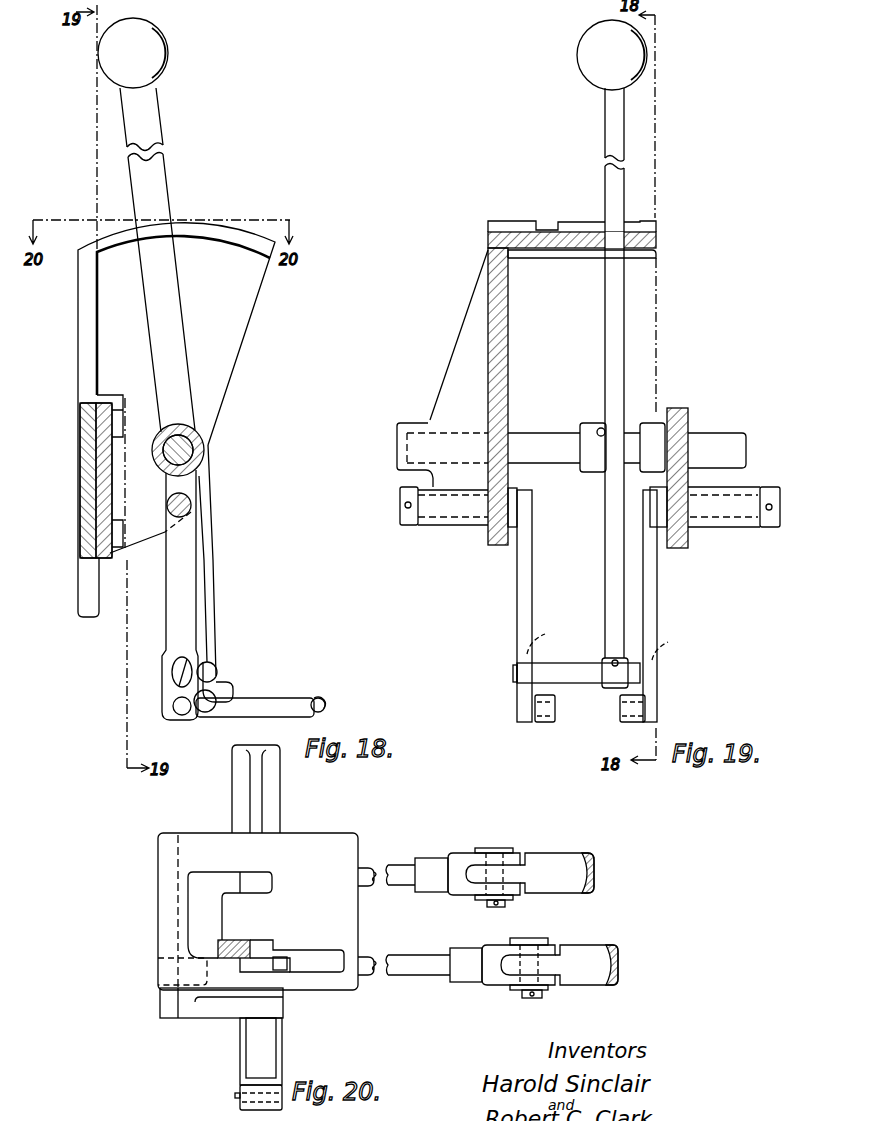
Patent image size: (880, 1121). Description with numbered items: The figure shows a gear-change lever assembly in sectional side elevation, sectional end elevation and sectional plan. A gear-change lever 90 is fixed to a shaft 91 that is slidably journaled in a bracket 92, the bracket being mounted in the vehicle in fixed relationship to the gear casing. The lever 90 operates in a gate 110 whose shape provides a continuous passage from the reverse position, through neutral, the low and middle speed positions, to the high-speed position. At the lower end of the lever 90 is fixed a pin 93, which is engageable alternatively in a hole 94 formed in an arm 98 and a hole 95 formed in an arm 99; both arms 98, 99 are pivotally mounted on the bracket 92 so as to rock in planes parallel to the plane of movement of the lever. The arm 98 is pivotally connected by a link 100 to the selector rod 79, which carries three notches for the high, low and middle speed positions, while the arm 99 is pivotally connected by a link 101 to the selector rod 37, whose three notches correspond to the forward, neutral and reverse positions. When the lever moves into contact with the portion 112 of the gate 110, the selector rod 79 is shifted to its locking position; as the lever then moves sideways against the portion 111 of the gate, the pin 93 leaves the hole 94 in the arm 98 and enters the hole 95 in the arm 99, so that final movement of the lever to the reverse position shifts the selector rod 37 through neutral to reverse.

In FIG. 18, the gear-change lever 90 is at (162, 206).
In FIG. 19, the gear-change lever 90 is at (615, 188).
In FIG. 20, the gear-change lever 90 is at (243, 940).
In FIG. 18, the gate 110 is at (232, 232).
In FIG. 19, the gate 110 is at (648, 228).
In FIG. 20, the gate 110 is at (335, 845).
In FIG. 18, the bracket 92 is at (90, 390).
In FIG. 19, the bracket 92 is at (450, 394).
In FIG. 20, the bracket 92 is at (160, 1016).
In FIG. 18, the shaft 91 is at (200, 451).
In FIG. 19, the shaft 91 is at (549, 433).
In FIG. 20, the shaft 91 is at (268, 1061).
In FIG. 18, the arm 99 is at (170, 614).
In FIG. 19, the arm 99 is at (656, 608).
In FIG. 18, the hole 95 is at (172, 672).
In FIG. 19, the hole 95 is at (671, 645).
In FIG. 18, the pin 93 is at (216, 668).
In FIG. 19, the pin 93 is at (572, 668).
In FIG. 20, the pin 93 is at (282, 962).
In FIG. 18, the arm 98 is at (226, 685).
In FIG. 19, the arm 98 is at (520, 596).
In FIG. 18, the link 100 is at (313, 698).
In FIG. 19, the link 100 is at (543, 723).
In FIG. 20, the link 100 is at (402, 868).
In FIG. 18, the link 101 is at (295, 713).
In FIG. 19, the link 101 is at (636, 723).
In FIG. 20, the link 101 is at (425, 960).
In FIG. 19, the hole 94 is at (545, 635).
In FIG. 20, the portion of the gate 111 is at (265, 968).
In FIG. 20, the portion of the gate 112 is at (258, 965).
In FIG. 20, the selector rod 79 is at (567, 866).
In FIG. 20, the selector rod 37 is at (587, 952).